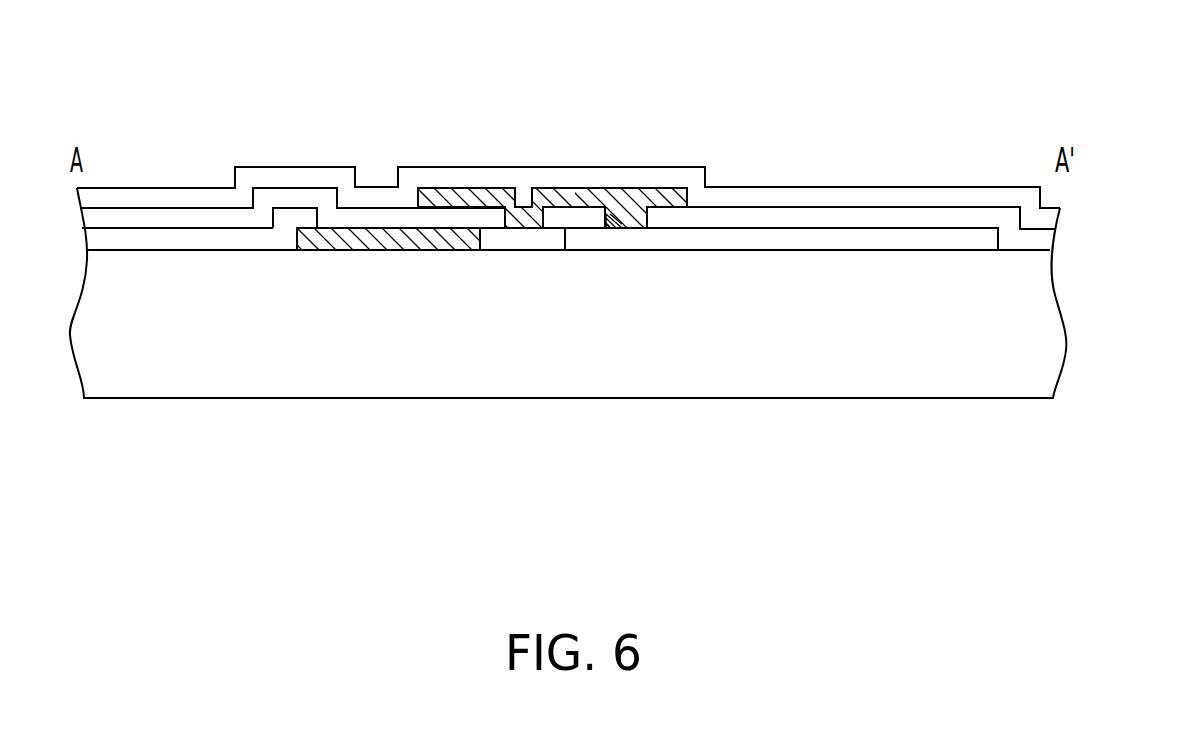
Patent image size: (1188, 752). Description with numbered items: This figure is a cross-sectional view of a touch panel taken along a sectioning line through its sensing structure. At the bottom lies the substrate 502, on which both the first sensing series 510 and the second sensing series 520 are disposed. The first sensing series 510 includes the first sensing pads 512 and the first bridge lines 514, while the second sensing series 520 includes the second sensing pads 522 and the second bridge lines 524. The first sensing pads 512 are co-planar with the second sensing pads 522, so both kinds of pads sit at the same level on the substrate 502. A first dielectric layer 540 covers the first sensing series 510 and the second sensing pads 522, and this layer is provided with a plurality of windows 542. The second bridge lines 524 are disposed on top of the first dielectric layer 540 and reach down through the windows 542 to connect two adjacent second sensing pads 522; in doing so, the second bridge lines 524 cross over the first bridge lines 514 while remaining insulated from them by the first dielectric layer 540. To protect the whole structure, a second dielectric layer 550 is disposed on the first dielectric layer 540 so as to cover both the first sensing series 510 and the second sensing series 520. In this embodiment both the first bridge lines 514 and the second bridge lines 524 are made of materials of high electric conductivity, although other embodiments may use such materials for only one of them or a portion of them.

The substrate 502 is at (1048, 372).
The first sensing series 510 is at (408, 70).
The first sensing pads 512 is at (263, 242).
The first bridge lines 514 is at (372, 238).
The second sensing series 520 is at (695, 70).
The second sensing pads 522 is at (740, 242).
The second bridge lines 524 is at (590, 190).
The first dielectric layer 540 is at (518, 240).
The windows 542 is at (615, 220).
The second dielectric layer 550 is at (481, 178).